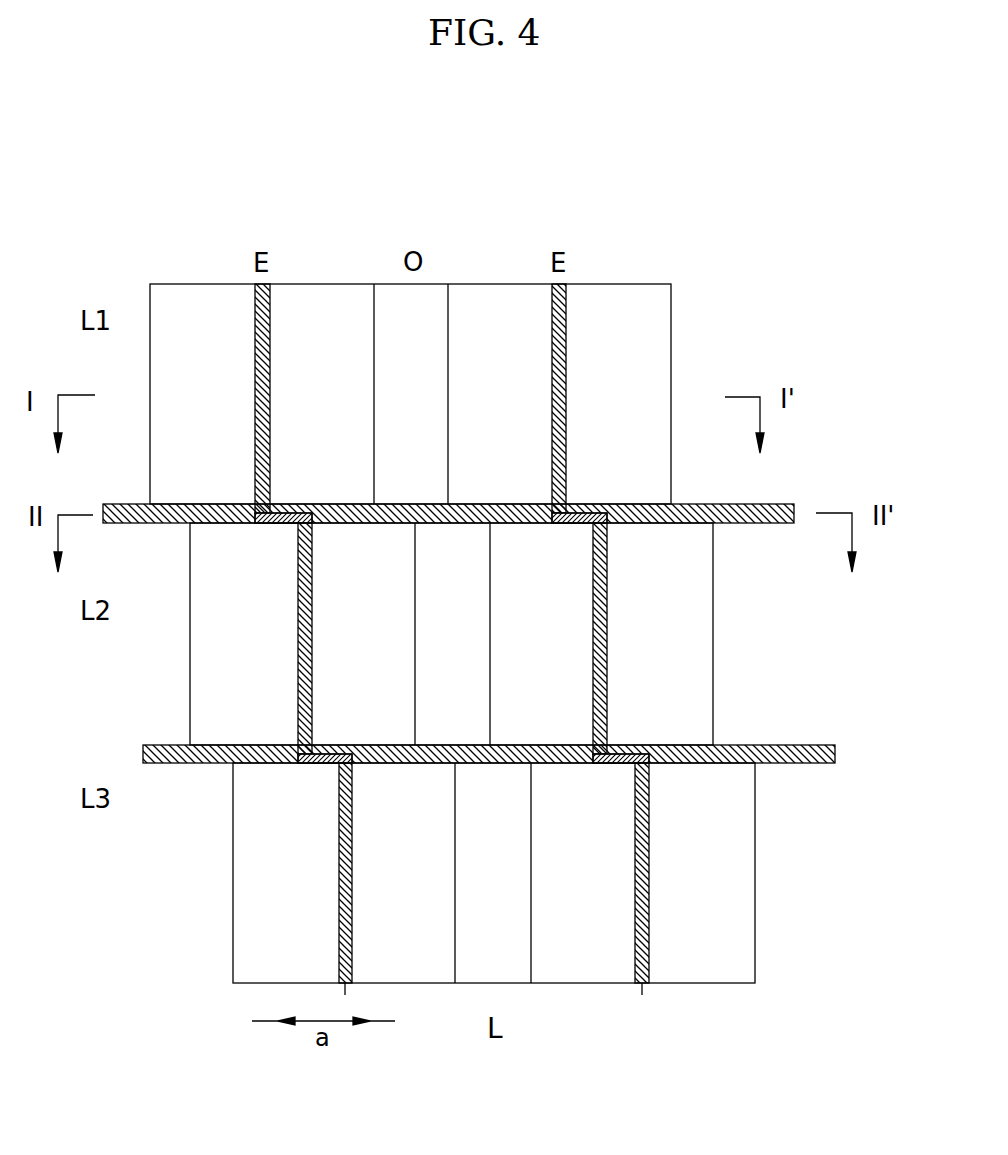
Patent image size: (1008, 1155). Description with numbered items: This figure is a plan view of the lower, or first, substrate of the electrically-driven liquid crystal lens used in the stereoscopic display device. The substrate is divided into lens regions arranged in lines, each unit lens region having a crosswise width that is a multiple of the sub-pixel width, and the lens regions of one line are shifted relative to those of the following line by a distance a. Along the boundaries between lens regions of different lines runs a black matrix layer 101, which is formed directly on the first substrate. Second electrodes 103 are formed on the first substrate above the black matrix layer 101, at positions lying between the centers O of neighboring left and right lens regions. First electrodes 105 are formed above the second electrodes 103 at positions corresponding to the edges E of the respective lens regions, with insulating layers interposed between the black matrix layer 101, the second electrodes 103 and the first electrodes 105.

The black matrix layer 101 is at (760, 524).
The second electrodes 103 is at (322, 285).
The first electrodes 105 is at (341, 902).